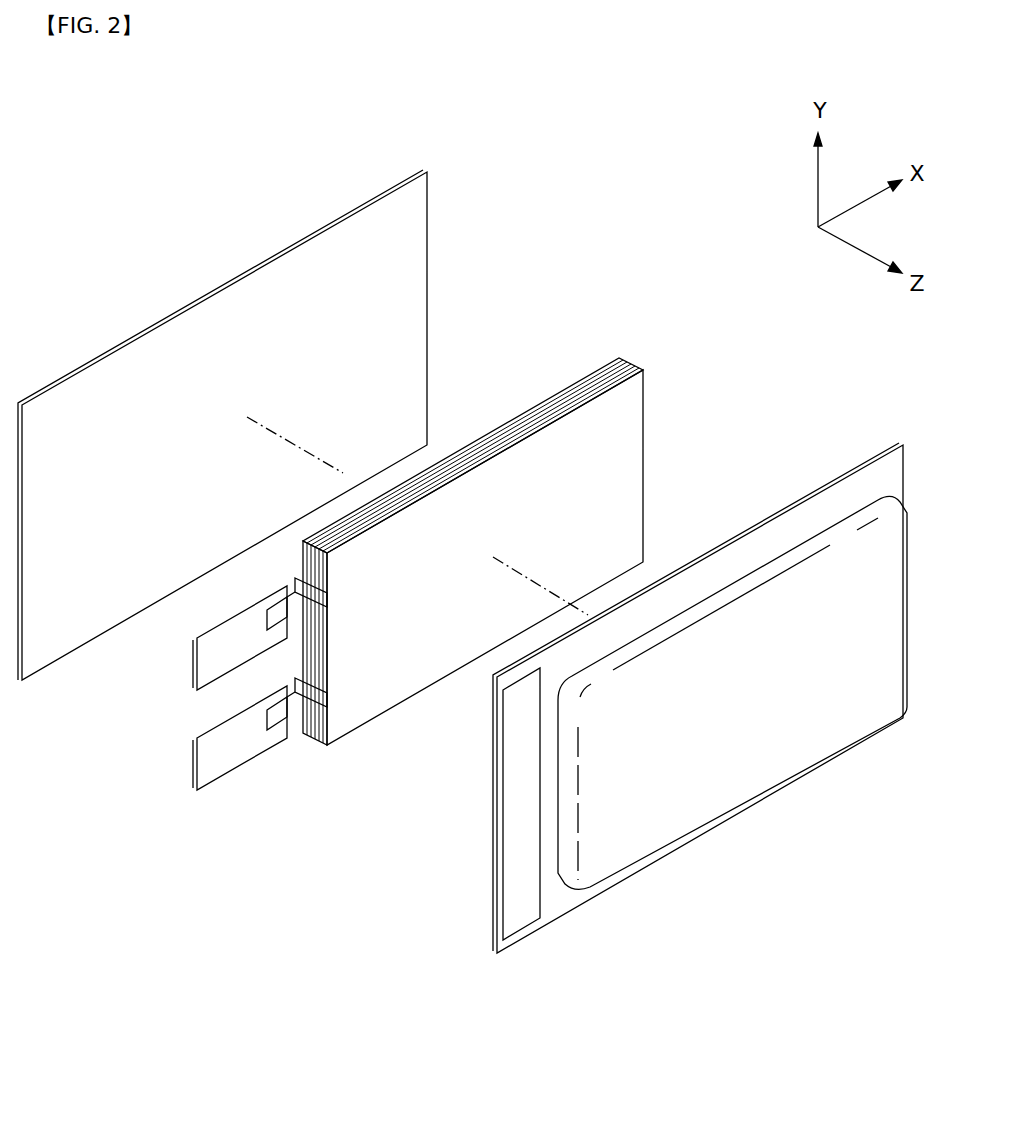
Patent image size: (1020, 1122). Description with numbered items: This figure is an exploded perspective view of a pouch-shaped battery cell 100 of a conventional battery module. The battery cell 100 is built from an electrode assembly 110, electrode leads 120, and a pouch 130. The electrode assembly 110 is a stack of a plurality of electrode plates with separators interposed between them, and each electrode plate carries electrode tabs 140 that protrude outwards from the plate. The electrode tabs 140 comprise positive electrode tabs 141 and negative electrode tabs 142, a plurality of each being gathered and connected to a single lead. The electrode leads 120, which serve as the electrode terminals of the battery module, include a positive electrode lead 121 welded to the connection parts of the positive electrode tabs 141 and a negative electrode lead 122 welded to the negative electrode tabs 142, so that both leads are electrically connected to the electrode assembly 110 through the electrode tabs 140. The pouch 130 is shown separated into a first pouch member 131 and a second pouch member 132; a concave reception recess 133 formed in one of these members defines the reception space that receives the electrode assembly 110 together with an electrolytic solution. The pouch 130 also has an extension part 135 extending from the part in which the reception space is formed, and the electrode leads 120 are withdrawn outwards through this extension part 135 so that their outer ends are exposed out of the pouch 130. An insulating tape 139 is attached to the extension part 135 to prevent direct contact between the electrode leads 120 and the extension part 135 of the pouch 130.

The battery cell 100 is at (86, 193).
The electrode assembly 110 is at (412, 650).
The electrode leads 120 is at (118, 690).
The positive electrode lead 121 is at (207, 667).
The negative electrode lead 122 is at (207, 760).
The pouch 130 is at (618, 187).
The first pouch member 131 is at (425, 200).
The second pouch member 132 is at (860, 490).
The reception recess 133 is at (738, 768).
The extension part 135 is at (497, 950).
The insulating tape 139 is at (523, 905).
The electrode tabs 140 is at (245, 857).
The positive electrode tabs 141 is at (289, 645).
The negative electrode tabs 142 is at (310, 740).